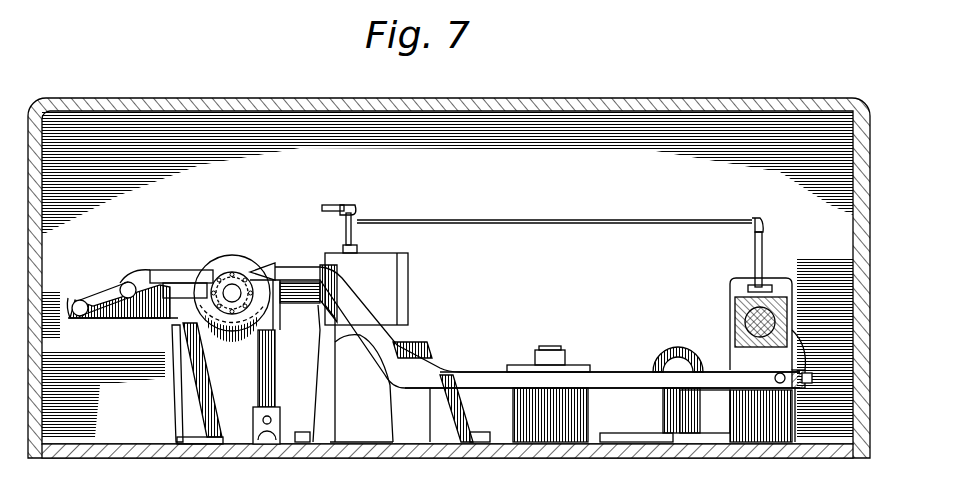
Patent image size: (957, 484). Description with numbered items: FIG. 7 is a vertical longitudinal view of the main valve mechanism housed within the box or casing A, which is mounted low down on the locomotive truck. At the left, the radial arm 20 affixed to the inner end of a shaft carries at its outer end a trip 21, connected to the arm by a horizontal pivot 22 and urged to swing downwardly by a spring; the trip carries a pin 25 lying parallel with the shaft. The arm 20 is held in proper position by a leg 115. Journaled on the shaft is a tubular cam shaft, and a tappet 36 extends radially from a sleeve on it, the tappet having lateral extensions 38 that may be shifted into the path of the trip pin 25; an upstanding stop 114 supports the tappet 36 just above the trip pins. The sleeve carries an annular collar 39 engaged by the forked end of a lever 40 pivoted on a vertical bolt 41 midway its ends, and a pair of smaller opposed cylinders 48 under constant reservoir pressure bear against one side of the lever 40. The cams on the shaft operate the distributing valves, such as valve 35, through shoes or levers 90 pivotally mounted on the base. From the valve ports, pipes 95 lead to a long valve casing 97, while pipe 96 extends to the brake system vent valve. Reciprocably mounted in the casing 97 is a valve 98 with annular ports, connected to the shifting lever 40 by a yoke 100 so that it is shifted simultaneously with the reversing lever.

The radial arm 20 is at (135, 318).
The trip 21 is at (107, 294).
The horizontal pivot 22 is at (67, 302).
The pin 25 is at (123, 280).
The valve 35 is at (306, 325).
The tappet 36 is at (177, 275).
The lateral extensions 38 is at (143, 277).
The annular collar 39 is at (250, 262).
The lever 40 is at (615, 373).
The vertical bolt 41 is at (552, 351).
The cylinders 48 is at (697, 341).
The shoes or levers 90 is at (262, 367).
The pipes 95 is at (503, 225).
The pipe 96 is at (336, 207).
The valve casing 97 is at (780, 294).
The valve 98 is at (758, 322).
The yoke 100 is at (812, 343).
The upstanding stop 114 is at (178, 393).
The leg 115 is at (199, 360).
The box or casing A is at (561, 183).